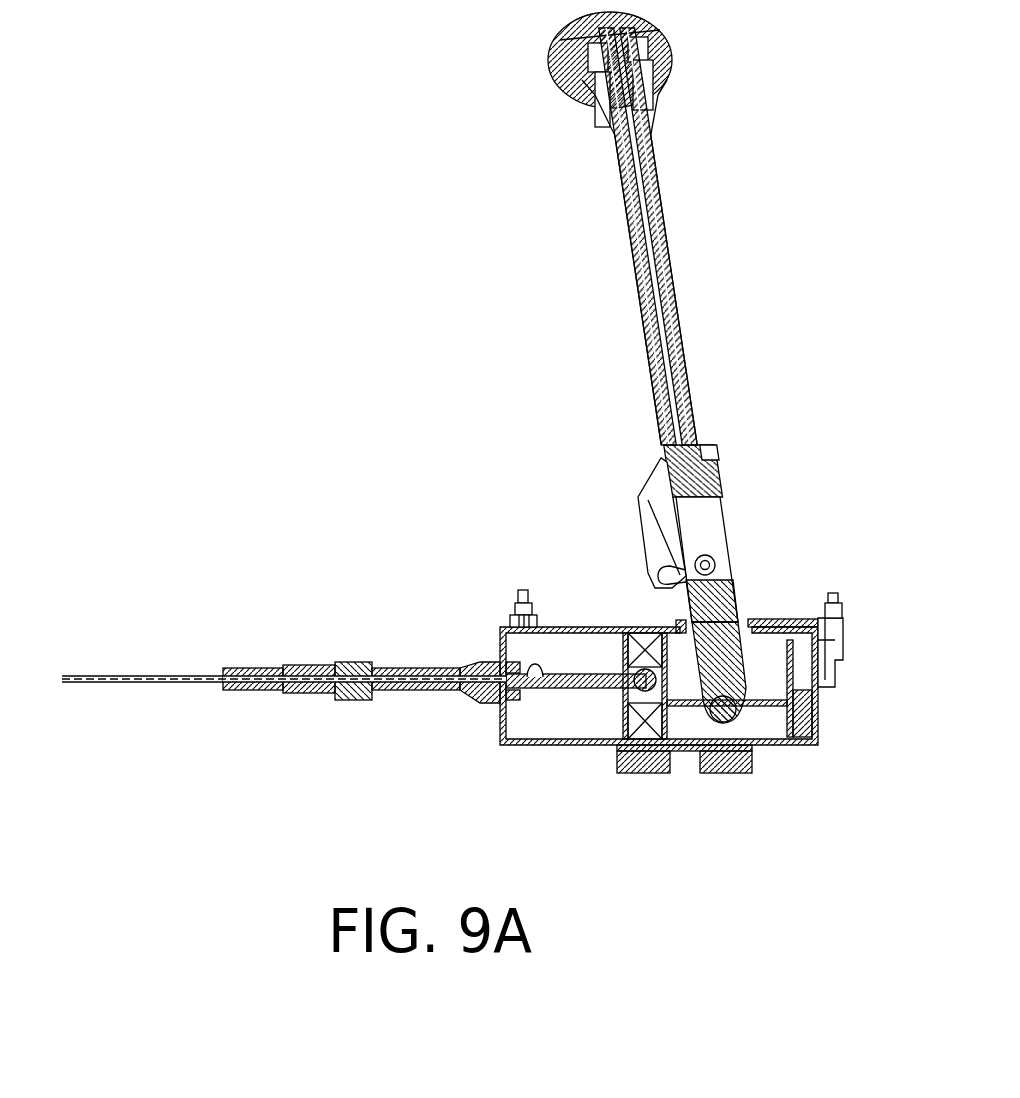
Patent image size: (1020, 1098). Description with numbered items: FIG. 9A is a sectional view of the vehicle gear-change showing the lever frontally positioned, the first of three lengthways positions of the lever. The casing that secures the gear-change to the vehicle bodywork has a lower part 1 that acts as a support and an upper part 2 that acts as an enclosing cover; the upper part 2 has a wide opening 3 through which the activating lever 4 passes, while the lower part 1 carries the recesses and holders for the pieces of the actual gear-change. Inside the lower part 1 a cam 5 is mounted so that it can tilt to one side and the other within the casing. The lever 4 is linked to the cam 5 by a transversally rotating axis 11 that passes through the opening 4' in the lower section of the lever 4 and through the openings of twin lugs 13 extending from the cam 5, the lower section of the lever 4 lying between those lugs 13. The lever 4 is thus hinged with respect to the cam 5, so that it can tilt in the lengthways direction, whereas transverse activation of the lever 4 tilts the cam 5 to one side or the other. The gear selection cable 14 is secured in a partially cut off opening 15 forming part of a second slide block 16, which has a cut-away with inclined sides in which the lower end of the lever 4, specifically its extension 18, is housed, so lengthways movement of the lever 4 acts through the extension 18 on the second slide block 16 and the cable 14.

The lower part of the casing 1 is at (500, 732).
The upper part of the casing 2 is at (500, 640).
The wide opening 3 is at (653, 617).
The activating lever 4 is at (777, 623).
The opening of the lever 4' is at (731, 513).
The cam 5 is at (790, 703).
The transversally rotating axis 11 is at (677, 552).
The twin lugs 13 is at (722, 562).
The gear selection cable 14 is at (90, 677).
The partially cut off opening 15 is at (622, 636).
The second slide block 16 is at (650, 703).
The extension 18 is at (743, 733).